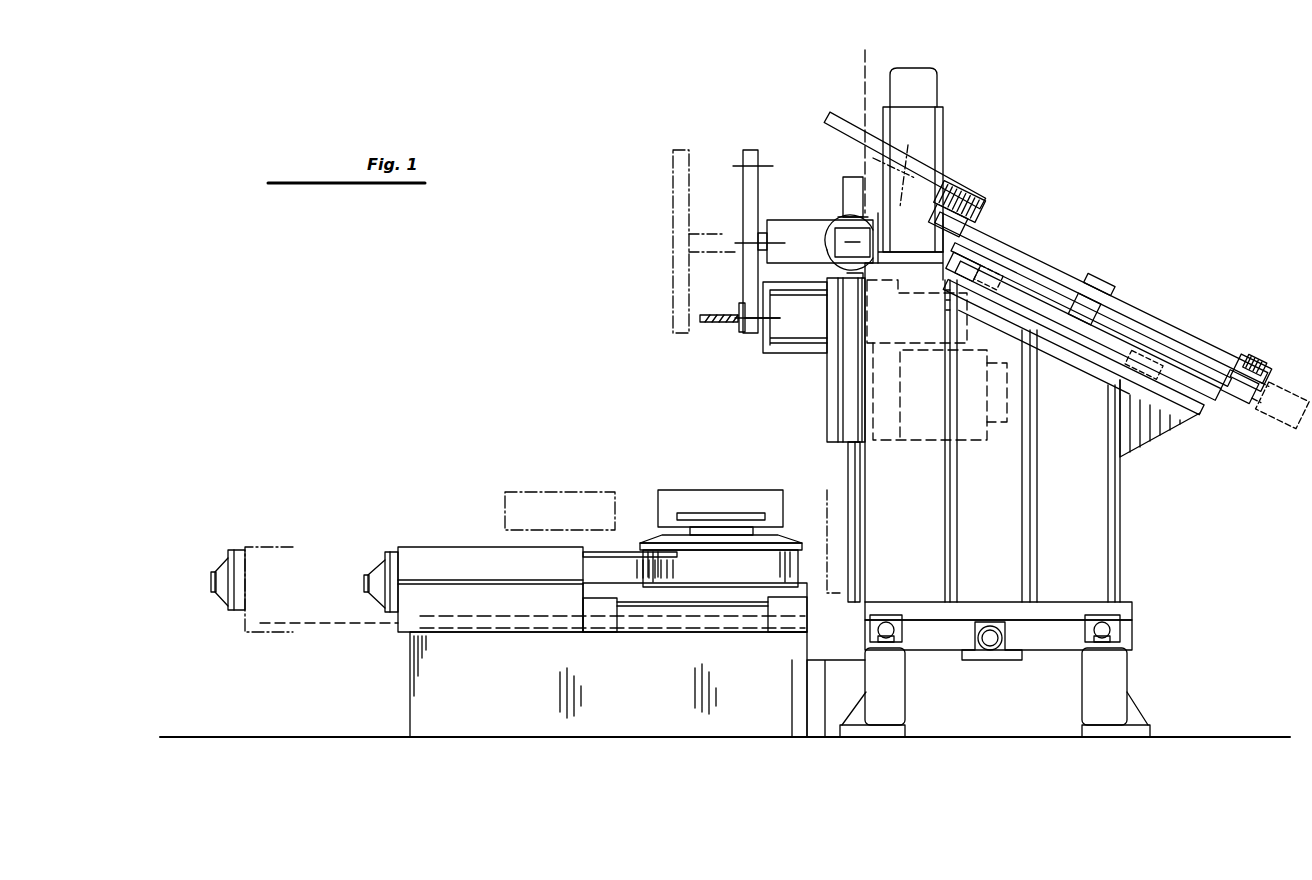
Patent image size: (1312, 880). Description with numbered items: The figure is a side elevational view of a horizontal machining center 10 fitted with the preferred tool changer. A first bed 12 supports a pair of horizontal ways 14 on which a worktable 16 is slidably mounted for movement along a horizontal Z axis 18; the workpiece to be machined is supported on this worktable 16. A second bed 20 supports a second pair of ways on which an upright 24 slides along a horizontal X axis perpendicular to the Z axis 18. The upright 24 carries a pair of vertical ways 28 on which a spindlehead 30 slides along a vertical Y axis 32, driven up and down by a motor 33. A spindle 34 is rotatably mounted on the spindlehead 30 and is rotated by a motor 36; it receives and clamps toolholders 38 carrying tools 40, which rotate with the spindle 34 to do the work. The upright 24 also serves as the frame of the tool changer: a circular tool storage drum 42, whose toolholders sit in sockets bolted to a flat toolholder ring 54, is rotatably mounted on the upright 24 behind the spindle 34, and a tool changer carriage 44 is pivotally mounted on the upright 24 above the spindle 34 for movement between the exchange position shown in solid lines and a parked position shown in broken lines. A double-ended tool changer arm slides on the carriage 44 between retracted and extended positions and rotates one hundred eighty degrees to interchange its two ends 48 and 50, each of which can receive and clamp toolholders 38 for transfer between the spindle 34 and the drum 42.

The horizontal machining center 10 is at (660, 428).
The first bed 12 is at (603, 697).
The horizontal ways 14 is at (690, 612).
The worktable 16 is at (716, 477).
The Z axis 18 is at (333, 628).
The second bed 20 is at (973, 713).
The upright 24 is at (1088, 512).
The vertical ways 28 is at (850, 462).
The spindlehead 30 is at (830, 393).
The Y axis 32 is at (862, 90).
The motor 33 is at (928, 132).
The spindle 34 is at (805, 325).
The motor 36 is at (975, 415).
The toolholders 38 is at (738, 323).
The tools 40 is at (703, 312).
The tool storage drum 42 is at (1125, 272).
The tool changer carriage 44 is at (803, 225).
The end of tool changer arm 48 is at (745, 150).
The end of tool changer arm 50 is at (745, 333).
The toolholder ring 54 is at (1180, 325).